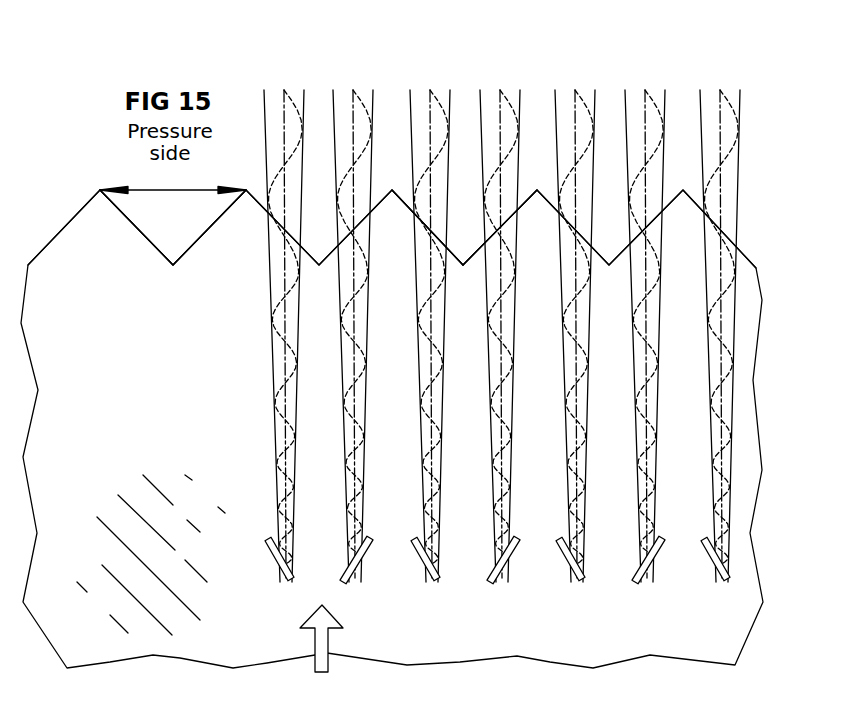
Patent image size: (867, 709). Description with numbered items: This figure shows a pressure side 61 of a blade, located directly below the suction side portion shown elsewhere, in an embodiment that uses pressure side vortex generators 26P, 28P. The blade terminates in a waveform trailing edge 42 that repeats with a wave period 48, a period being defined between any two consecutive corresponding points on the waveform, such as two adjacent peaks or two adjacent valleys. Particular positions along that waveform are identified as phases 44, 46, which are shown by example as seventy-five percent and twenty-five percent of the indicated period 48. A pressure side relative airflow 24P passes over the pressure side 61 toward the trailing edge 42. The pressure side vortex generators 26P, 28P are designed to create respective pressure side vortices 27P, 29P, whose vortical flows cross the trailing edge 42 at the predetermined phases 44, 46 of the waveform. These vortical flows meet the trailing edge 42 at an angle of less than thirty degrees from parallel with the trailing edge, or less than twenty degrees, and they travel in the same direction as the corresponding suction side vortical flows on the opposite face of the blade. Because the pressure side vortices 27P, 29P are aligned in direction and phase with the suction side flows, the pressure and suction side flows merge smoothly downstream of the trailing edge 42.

The trailing edge 42 is at (402, 200).
The phase 44 is at (428, 229).
The phase 46 is at (500, 228).
The wave period 48 is at (177, 192).
The pressure side 61 is at (152, 452).
The pressure side relative airflow 24P is at (306, 621).
The pressure side vortex generator 26P is at (430, 583).
The pressure side vortex generator 28P is at (494, 583).
The pressure side vortex 27P is at (421, 461).
The pressure side vortex 29P is at (510, 462).